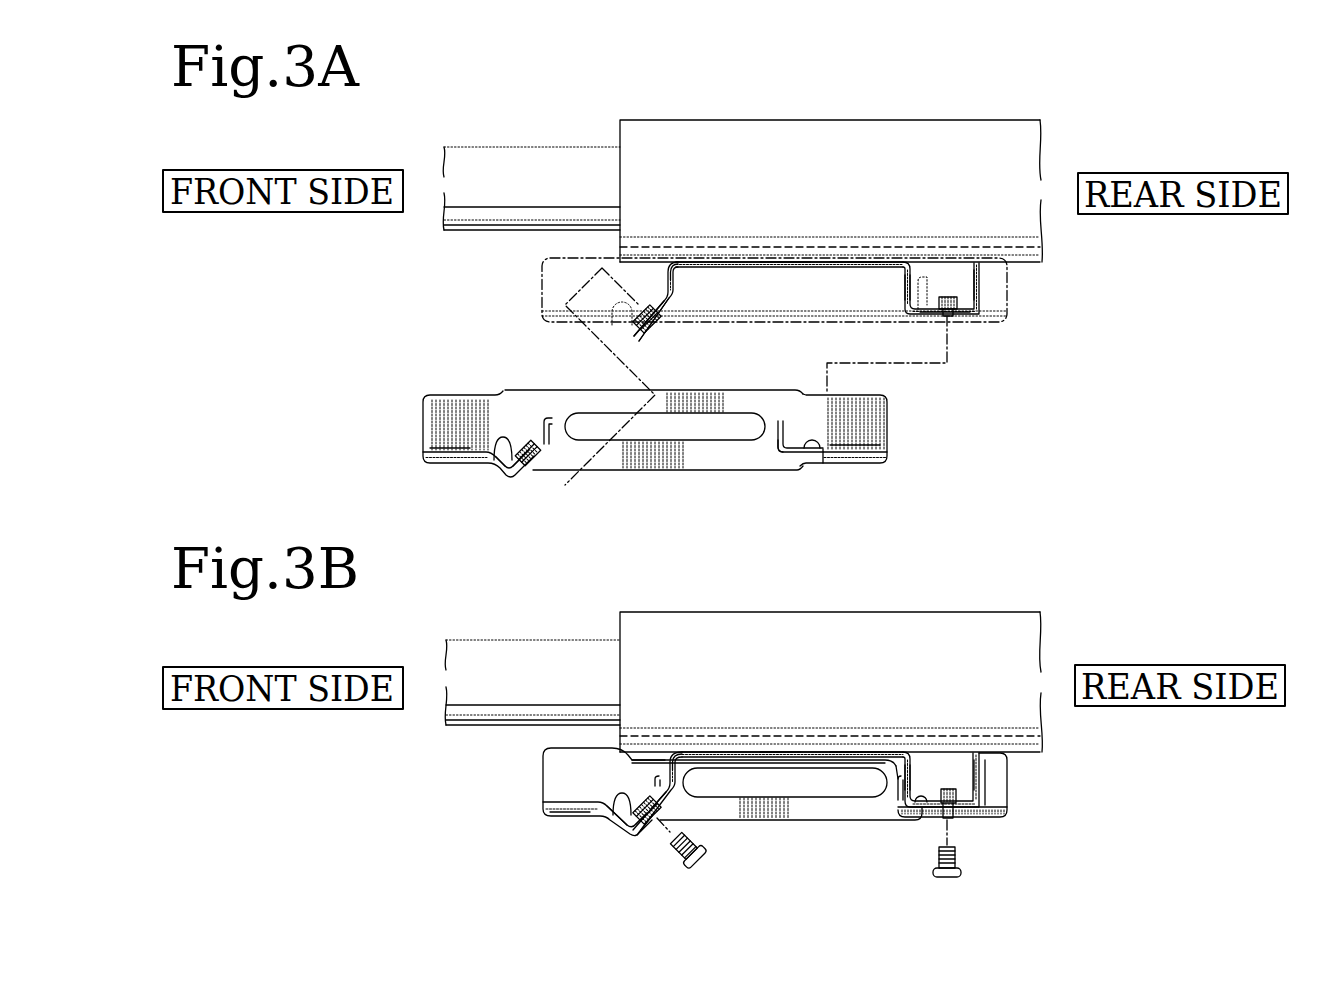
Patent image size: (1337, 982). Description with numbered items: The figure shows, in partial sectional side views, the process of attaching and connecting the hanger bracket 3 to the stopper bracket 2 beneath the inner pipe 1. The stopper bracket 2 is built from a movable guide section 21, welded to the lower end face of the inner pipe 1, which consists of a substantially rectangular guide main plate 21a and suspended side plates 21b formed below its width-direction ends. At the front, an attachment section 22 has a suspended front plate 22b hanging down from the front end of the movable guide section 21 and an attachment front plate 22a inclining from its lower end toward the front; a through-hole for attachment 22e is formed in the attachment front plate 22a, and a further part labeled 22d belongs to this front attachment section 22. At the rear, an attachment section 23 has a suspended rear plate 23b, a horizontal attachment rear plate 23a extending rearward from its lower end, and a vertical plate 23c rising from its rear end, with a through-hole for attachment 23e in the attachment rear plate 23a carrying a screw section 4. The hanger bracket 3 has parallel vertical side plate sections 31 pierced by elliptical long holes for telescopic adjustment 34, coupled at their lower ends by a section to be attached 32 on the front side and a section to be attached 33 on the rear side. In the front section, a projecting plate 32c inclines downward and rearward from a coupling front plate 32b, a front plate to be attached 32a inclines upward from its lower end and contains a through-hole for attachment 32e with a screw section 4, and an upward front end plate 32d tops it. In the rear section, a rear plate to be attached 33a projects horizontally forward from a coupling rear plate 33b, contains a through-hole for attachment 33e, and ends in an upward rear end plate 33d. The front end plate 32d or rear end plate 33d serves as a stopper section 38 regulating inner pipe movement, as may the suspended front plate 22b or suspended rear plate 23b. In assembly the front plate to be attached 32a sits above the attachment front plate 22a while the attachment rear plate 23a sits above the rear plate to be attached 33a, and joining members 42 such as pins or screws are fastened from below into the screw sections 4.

In FIG. 3A, the inner pipe 1 is at (976, 120).
In FIG. 3B, the inner pipe 1 is at (976, 612).
In FIG. 3A, the stopper bracket 2 is at (866, 264).
In FIG. 3B, the stopper bracket 2 is at (863, 762).
In FIG. 3A, the hanger bracket 3 is at (665, 438).
In FIG. 3B, the hanger bracket 3 is at (775, 761).
In FIG. 3A, the screw section 4 is at (949, 316).
In FIG. 3B, the screw section 4 is at (948, 789).
In FIG. 3A, the movable guide section 21 is at (770, 262).
In FIG. 3B, the movable guide section 21 is at (757, 752).
In FIG. 3A, the guide main plate 21a is at (787, 267).
In FIG. 3B, the guide main plate 21a is at (773, 767).
In FIG. 3A, the suspended side plates 21b is at (853, 269).
In FIG. 3B, the suspended side plates 21b is at (853, 763).
In FIG. 3A, the attachment section on the front side 22 is at (693, 273).
In FIG. 3B, the attachment section on the front side 22 is at (701, 768).
In FIG. 3A, the attachment front plate 22a is at (641, 335).
In FIG. 3B, the attachment front plate 22a is at (683, 805).
In FIG. 3A, the suspended front plate 22b is at (688, 291).
In FIG. 3B, the suspended front plate 22b is at (682, 780).
In FIG. 3B, the screw hole 22d is at (655, 823).
In FIG. 3A, the through-hole for attachment 22e is at (654, 312).
In FIG. 3A, the attachment section on the rear side 23 is at (1001, 255).
In FIG. 3B, the attachment section on the rear side 23 is at (998, 727).
In FIG. 3A, the attachment rear plate 23a is at (958, 314).
In FIG. 3A, the suspended rear plate 23b is at (946, 300).
In FIG. 3B, the suspended rear plate 23b is at (912, 775).
In FIG. 3A, the vertical plate 23c is at (979, 283).
In FIG. 3B, the vertical plate 23c is at (974, 770).
In FIG. 3A, the through-hole for attachment 23e is at (915, 278).
In FIG. 3B, the through-hole for attachment 23e is at (947, 788).
In FIG. 3A, the side plate sections 31 is at (654, 468).
In FIG. 3B, the side plate sections 31 is at (777, 826).
In FIG. 3A, the section to be attached on the front side 32 is at (489, 428).
In FIG. 3B, the section to be attached on the front side 32 is at (613, 758).
In FIG. 3A, the front plate to be attached 32a is at (530, 447).
In FIG. 3B, the front plate to be attached 32a is at (643, 806).
In FIG. 3A, the coupling front plate 32b is at (440, 447).
In FIG. 3B, the coupling front plate 32b is at (562, 830).
In FIG. 3A, the projecting plate 32c is at (498, 470).
In FIG. 3B, the projecting plate 32c is at (630, 822).
In FIG. 3A, the front end plate 32d is at (566, 396).
In FIG. 3B, the front end plate 32d is at (676, 708).
In FIG. 3A, the through-hole for attachment 32e is at (527, 452).
In FIG. 3B, the through-hole for attachment 32e is at (643, 800).
In FIG. 3A, the section to be attached on the rear side 33 is at (859, 450).
In FIG. 3B, the section to be attached on the rear side 33 is at (934, 750).
In FIG. 3A, the rear plate to be attached 33a is at (792, 447).
In FIG. 3B, the rear plate to be attached 33a is at (894, 768).
In FIG. 3A, the coupling rear plate 33b is at (862, 431).
In FIG. 3B, the coupling rear plate 33b is at (987, 800).
In FIG. 3A, the rear end plate 33d is at (775, 449).
In FIG. 3B, the rear end plate 33d is at (897, 772).
In FIG. 3A, the through-hole for attachment 33e is at (820, 455).
In FIG. 3B, the through-hole for attachment 33e is at (940, 803).
In FIG. 3A, the long holes for telescopic adjustment 34 is at (722, 443).
In FIG. 3B, the long holes for telescopic adjustment 34 is at (803, 787).
In FIG. 3A, the stopper section 38 is at (556, 433).
In FIG. 3B, the stopper section 38 is at (662, 782).
In FIG. 3B, the joining members 42 is at (958, 862).